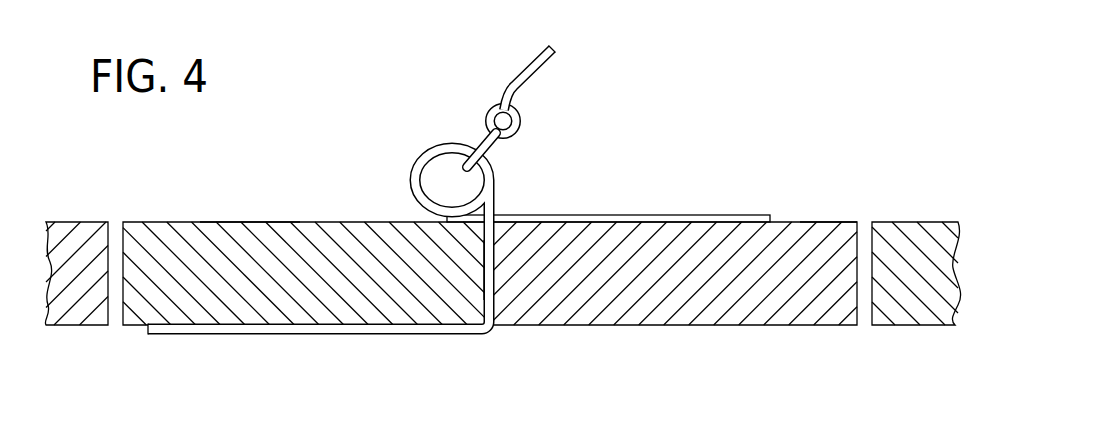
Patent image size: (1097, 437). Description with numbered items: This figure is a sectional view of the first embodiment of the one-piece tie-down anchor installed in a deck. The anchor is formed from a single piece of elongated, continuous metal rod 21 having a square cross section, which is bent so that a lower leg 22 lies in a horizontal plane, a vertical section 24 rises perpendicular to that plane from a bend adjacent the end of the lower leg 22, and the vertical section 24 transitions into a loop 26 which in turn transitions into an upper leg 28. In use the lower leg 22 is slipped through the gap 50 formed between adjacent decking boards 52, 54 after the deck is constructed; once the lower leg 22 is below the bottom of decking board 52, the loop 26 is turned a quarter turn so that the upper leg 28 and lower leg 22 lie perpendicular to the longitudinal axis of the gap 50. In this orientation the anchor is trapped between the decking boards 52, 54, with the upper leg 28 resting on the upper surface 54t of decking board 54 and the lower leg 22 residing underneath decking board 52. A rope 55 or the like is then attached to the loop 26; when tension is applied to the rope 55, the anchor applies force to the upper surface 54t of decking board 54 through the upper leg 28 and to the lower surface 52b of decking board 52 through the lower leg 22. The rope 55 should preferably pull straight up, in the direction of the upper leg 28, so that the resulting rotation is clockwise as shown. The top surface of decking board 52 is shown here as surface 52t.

The metal rod 21 is at (428, 143).
The lower leg 22 is at (322, 333).
The vertical section 24 is at (492, 270).
The loop 26 is at (408, 177).
The upper leg 28 is at (703, 215).
The gap 50 is at (482, 283).
The decking board 52 is at (188, 222).
The top surface of first panel 52t is at (265, 222).
The lower surface of decking board 52b is at (210, 333).
The decking board 54 is at (797, 222).
The upper surface of decking board 54t is at (842, 222).
The rope 55 is at (518, 70).